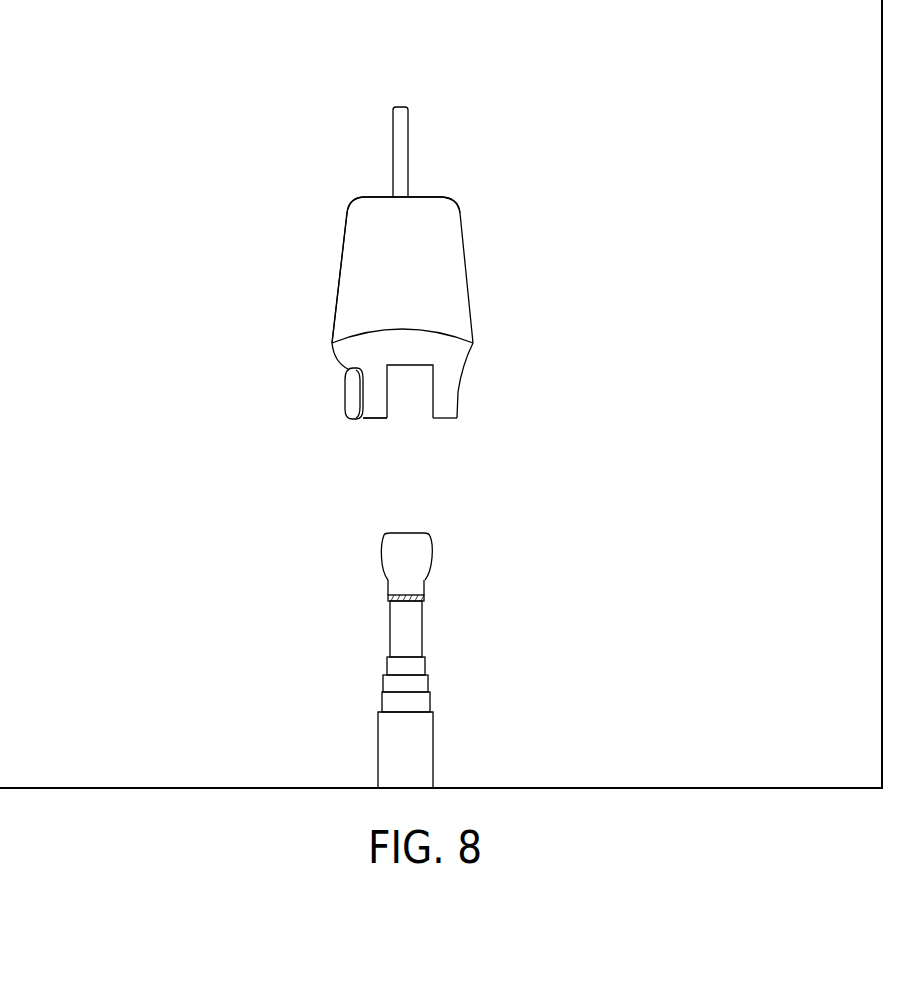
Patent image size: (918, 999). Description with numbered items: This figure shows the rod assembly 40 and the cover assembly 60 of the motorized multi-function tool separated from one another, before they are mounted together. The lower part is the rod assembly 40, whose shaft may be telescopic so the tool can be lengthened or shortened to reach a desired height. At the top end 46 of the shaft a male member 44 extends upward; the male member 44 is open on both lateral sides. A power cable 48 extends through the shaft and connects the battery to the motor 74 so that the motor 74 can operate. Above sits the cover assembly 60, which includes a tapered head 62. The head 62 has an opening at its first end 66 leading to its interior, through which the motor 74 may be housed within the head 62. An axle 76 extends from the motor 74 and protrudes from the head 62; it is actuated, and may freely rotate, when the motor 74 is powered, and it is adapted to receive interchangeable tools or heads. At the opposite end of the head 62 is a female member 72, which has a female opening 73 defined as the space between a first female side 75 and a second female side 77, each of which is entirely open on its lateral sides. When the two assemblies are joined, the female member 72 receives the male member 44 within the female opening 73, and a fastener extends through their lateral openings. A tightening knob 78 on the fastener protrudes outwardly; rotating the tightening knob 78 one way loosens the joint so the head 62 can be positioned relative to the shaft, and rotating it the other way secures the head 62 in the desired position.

The rod assembly 40 is at (368, 734).
The male member 44 is at (413, 587).
The top end 46 is at (388, 597).
The power cable 48 is at (408, 730).
The cover assembly 60 is at (330, 276).
The head 62 is at (347, 232).
The first end 66 is at (435, 198).
The female member 72 is at (455, 409).
The female opening 73 is at (407, 380).
The motor 74 is at (437, 280).
The first female side 75 is at (378, 410).
The axle 76 is at (400, 147).
The second female side 77 is at (440, 409).
The tightening knob 78 is at (338, 394).